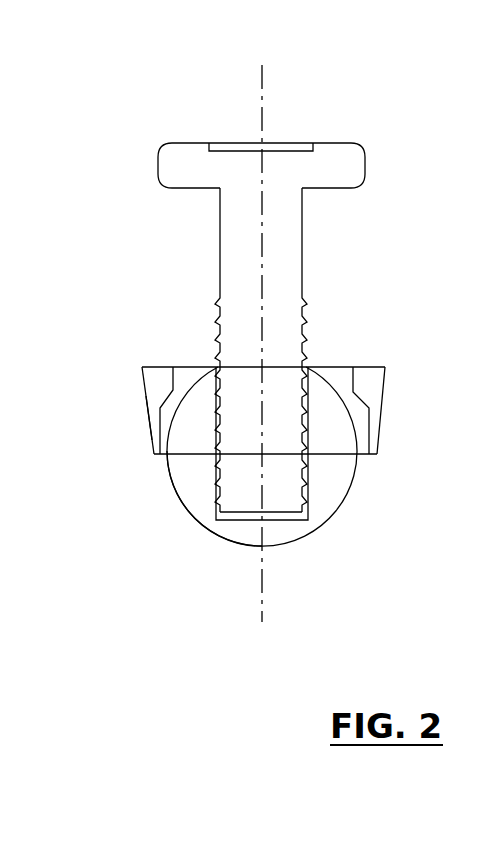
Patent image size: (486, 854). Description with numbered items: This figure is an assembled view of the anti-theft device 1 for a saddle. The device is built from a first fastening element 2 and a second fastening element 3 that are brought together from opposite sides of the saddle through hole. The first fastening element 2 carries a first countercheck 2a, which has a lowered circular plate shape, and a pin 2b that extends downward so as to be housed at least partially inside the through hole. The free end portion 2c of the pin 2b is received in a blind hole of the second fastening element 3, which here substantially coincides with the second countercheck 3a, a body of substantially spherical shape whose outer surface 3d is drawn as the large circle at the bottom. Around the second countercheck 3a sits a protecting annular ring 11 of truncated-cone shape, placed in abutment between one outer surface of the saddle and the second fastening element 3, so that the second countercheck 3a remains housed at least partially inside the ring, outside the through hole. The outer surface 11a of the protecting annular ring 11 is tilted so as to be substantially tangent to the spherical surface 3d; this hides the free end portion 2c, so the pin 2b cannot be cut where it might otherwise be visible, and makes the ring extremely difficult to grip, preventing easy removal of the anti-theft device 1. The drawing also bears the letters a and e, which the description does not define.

The anti-theft device 1 is at (112, 207).
The first fastening element 2 is at (182, 122).
The first countercheck 2a is at (320, 162).
The pin 2b is at (288, 330).
The free end portion 2c is at (275, 502).
The second fastening element 3 is at (175, 505).
The second countercheck 3a is at (196, 407).
The outer surface of second countercheck 3d is at (165, 483).
The protecting annular ring 11 is at (142, 377).
The outer surface of protecting ring 11a is at (150, 432).
The axis a is at (12, 275).
The axis e is at (12, 325).